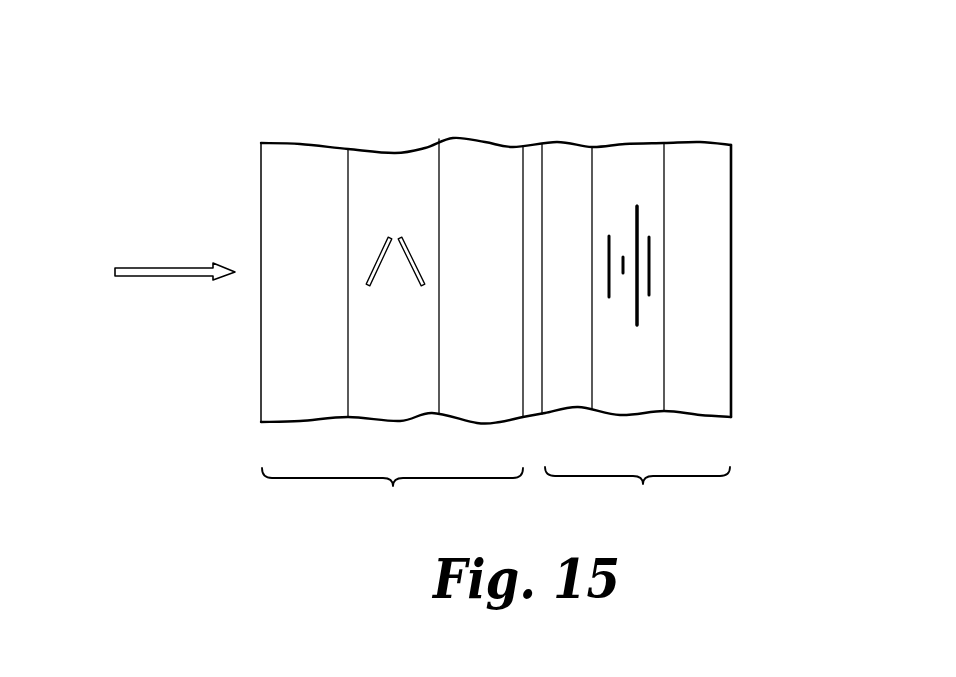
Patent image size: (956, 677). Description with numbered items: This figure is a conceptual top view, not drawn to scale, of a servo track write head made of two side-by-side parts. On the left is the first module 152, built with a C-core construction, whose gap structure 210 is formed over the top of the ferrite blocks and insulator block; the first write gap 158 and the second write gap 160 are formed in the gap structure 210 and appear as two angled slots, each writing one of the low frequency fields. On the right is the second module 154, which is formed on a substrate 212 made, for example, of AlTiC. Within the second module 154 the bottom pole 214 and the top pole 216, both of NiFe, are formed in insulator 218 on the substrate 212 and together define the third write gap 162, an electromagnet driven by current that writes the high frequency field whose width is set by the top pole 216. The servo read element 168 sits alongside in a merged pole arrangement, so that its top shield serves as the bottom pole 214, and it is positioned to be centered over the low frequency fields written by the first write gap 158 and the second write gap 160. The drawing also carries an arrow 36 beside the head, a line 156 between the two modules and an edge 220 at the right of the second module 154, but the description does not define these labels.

The direction of travel arrow 36 is at (161, 267).
The first module 152 is at (392, 492).
The second module 154 is at (637, 492).
The boundary line 156 is at (532, 418).
The first write gap 158 is at (383, 268).
The second write gap 160 is at (410, 268).
The third write gap 162 is at (647, 205).
The servo read element 168 is at (617, 205).
The gap structure 210 is at (395, 155).
The substrate 212 is at (562, 143).
The bottom pole 214 is at (638, 312).
The top pole 216 is at (650, 275).
The insulator 218 is at (630, 417).
The end edge 220 is at (731, 215).